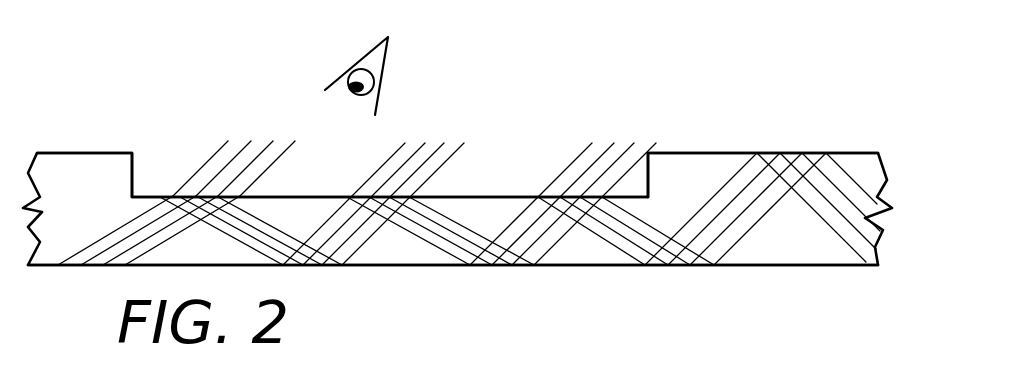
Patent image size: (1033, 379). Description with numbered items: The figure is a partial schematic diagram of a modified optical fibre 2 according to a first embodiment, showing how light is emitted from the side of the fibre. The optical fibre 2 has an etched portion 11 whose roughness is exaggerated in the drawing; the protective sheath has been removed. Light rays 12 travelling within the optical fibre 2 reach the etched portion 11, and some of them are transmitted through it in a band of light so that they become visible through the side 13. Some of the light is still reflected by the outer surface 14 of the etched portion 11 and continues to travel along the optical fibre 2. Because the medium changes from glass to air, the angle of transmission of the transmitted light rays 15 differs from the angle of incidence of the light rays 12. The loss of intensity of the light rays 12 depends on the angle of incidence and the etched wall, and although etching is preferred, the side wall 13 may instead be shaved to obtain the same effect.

The optical fibre 2 is at (796, 112).
The etched portion 11 is at (497, 153).
The light rays 12 is at (747, 220).
The side 13 is at (671, 153).
The outer surface 14 is at (490, 199).
The transmitted light rays 15 is at (203, 175).